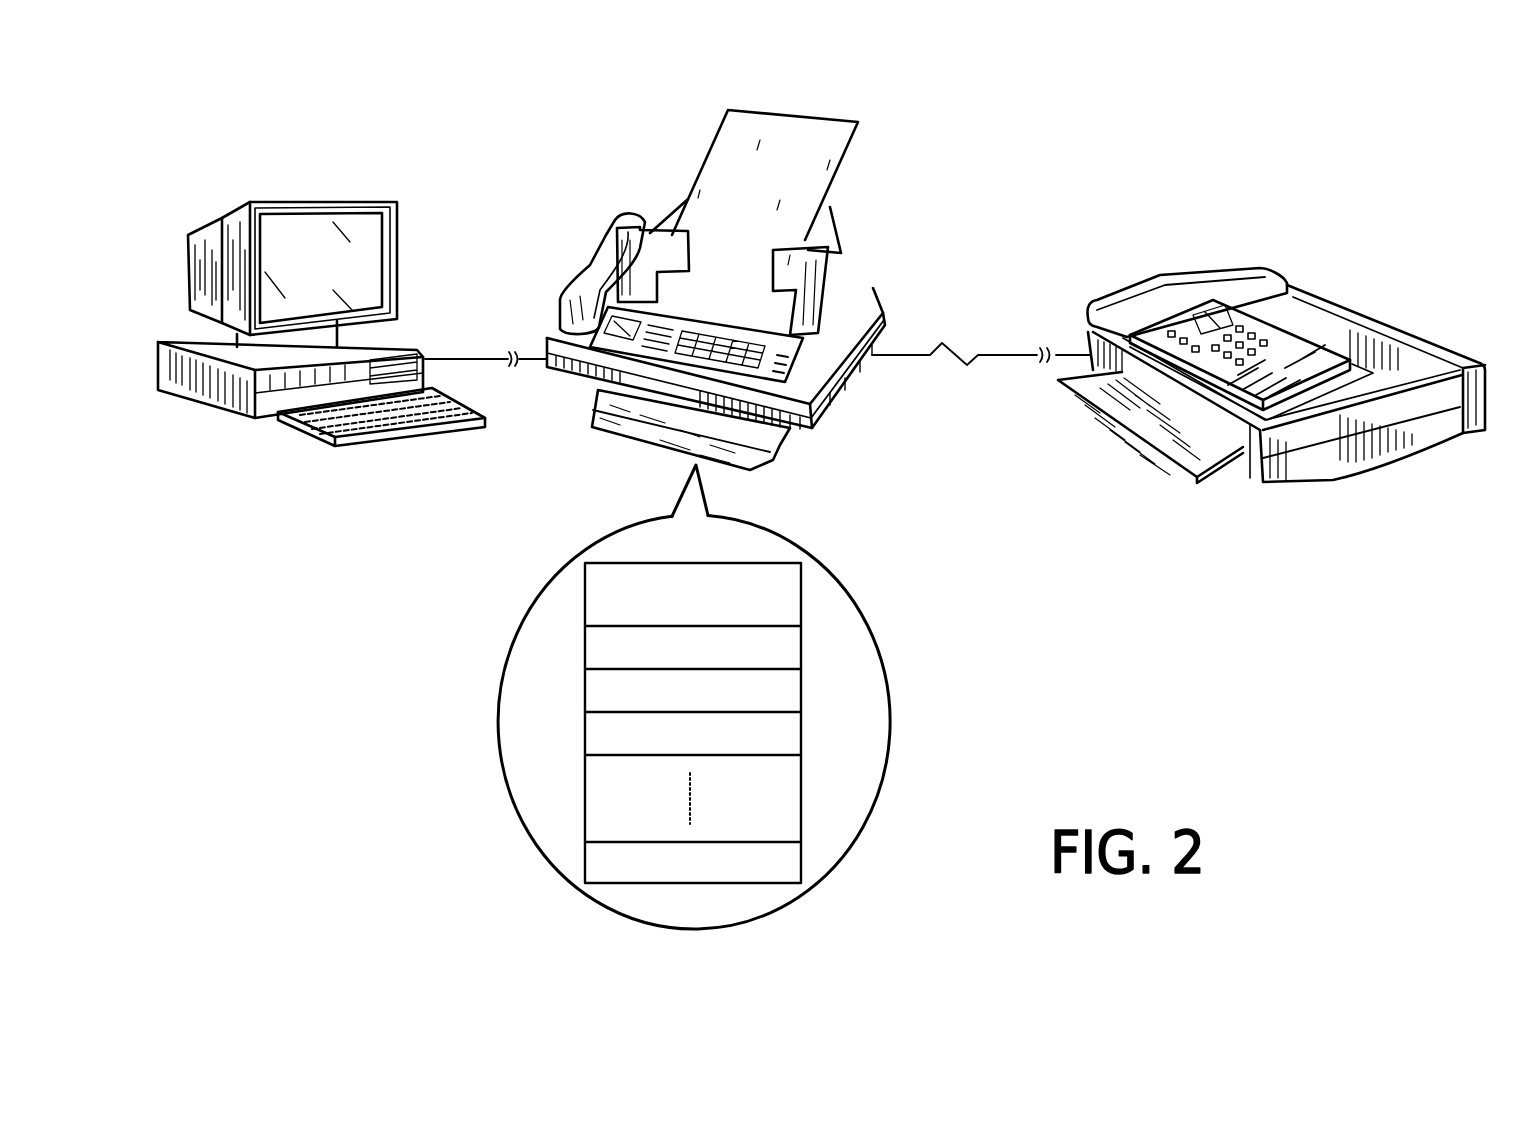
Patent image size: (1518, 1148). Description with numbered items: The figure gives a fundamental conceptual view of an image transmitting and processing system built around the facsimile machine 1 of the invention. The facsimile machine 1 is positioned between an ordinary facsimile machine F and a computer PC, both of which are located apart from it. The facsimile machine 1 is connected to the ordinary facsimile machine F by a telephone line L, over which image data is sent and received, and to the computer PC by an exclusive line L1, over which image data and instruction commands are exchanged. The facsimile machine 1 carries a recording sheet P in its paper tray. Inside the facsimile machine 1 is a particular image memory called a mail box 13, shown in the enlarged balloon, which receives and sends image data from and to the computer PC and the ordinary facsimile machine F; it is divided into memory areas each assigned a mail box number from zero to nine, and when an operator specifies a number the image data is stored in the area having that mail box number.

The computer PC is at (405, 242).
The exclusive line L1 is at (488, 360).
The facsimile machine 1 is at (837, 232).
The recording paper P is at (708, 150).
The mail box 13 is at (863, 609).
The telephone line L is at (1007, 352).
The ordinary facsimile machine F is at (1357, 465).